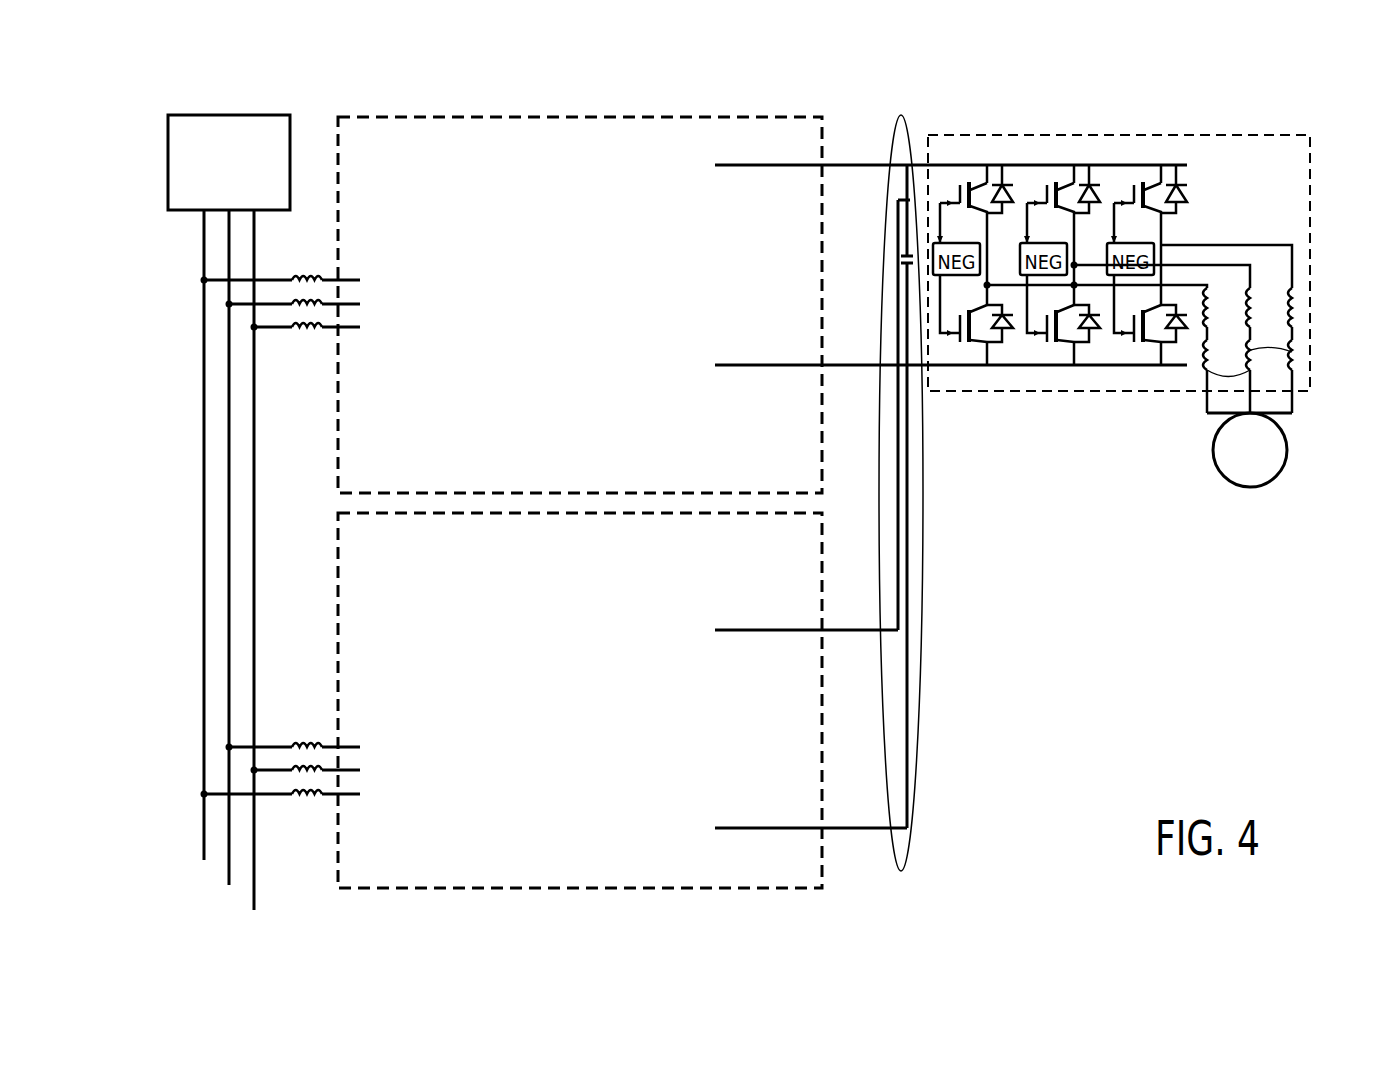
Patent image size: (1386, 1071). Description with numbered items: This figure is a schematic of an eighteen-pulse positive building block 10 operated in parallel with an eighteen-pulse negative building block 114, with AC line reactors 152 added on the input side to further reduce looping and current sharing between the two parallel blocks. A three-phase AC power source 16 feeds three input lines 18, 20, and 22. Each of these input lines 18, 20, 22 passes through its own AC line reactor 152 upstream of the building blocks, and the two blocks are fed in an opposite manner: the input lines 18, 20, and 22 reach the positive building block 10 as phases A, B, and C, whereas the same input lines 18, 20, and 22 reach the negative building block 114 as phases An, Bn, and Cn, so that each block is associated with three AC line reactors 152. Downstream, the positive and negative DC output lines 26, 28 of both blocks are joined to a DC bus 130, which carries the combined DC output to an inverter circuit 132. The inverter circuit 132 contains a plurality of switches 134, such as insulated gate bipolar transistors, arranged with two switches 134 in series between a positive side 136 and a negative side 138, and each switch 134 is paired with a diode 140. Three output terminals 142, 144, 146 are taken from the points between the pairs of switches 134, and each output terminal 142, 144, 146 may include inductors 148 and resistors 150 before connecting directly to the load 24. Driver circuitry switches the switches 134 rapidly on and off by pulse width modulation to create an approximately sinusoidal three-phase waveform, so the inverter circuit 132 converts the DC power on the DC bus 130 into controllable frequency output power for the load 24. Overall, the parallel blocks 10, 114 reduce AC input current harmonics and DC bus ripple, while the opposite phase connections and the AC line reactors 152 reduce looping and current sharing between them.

The three-phase AC power source 16 is at (232, 114).
The input line 18 is at (205, 596).
The input line 20 is at (229, 631).
The input line 22 is at (254, 664).
The AC line reactor 152 is at (292, 325).
The 18-pulse positive building block 10 is at (337, 406).
The 18-pulse negative building block 114 is at (337, 543).
The positive DC output line 26 is at (838, 167).
The negative DC output line 28 is at (838, 366).
The DC bus 130 is at (900, 128).
The inverter circuit 132 is at (1212, 132).
The switch 134 is at (958, 198).
The positive side 136 is at (988, 183).
The negative side 138 is at (988, 348).
The diode 140 is at (1006, 178).
The output terminal 142 is at (1213, 288).
The output terminal 144 is at (1252, 290).
The output terminal 146 is at (1294, 262).
The inductor 148 is at (1296, 300).
The resistor 150 is at (1294, 357).
The load 24 is at (1215, 478).